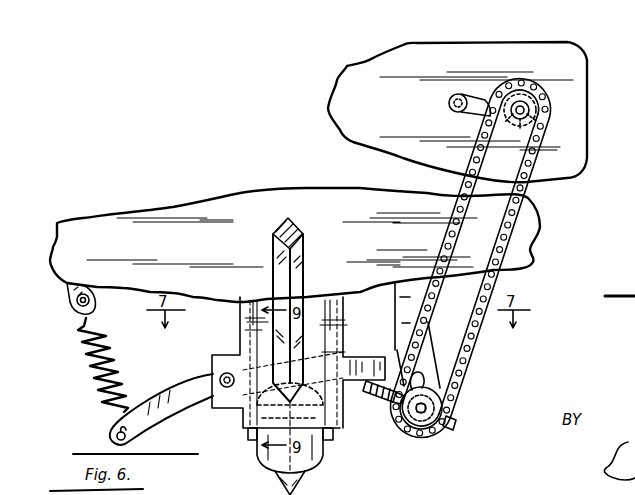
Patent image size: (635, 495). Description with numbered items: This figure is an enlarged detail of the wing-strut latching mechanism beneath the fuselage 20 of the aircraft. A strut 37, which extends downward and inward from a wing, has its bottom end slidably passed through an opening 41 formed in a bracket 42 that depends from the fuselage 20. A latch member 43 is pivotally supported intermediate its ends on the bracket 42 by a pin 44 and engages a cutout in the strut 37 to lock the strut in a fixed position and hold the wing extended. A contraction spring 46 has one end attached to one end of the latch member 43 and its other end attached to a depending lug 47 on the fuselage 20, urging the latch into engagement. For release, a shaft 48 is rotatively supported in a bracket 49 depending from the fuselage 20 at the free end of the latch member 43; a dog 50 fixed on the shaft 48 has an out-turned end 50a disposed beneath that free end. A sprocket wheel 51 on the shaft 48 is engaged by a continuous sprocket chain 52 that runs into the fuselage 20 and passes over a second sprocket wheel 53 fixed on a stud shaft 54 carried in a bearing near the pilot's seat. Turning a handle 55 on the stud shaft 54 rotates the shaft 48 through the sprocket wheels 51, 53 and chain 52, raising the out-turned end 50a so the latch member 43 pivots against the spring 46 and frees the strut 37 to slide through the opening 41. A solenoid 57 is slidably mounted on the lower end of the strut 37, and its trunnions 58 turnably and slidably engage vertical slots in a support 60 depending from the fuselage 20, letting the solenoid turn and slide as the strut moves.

The fuselage 20 is at (566, 78).
The strut 37 is at (298, 275).
The opening 41 is at (280, 392).
The bracket 42 is at (345, 336).
The latch member 43 is at (163, 410).
The pin 44 is at (221, 375).
The contraction spring 46 is at (92, 366).
The depending lug 47 is at (75, 296).
The shaft 48 is at (432, 404).
The bracket 49 is at (437, 335).
The dog 50 is at (399, 403).
The out-turned end 50a is at (396, 388).
The sprocket wheel 51 is at (419, 416).
The sprocket chain 52 is at (488, 290).
The second sprocket wheel 53 is at (556, 116).
The stud shaft 54 is at (548, 105).
The handle 55 is at (449, 103).
The solenoid 57 is at (318, 458).
The trunnion 58 is at (250, 436).
The support 60 is at (258, 284).